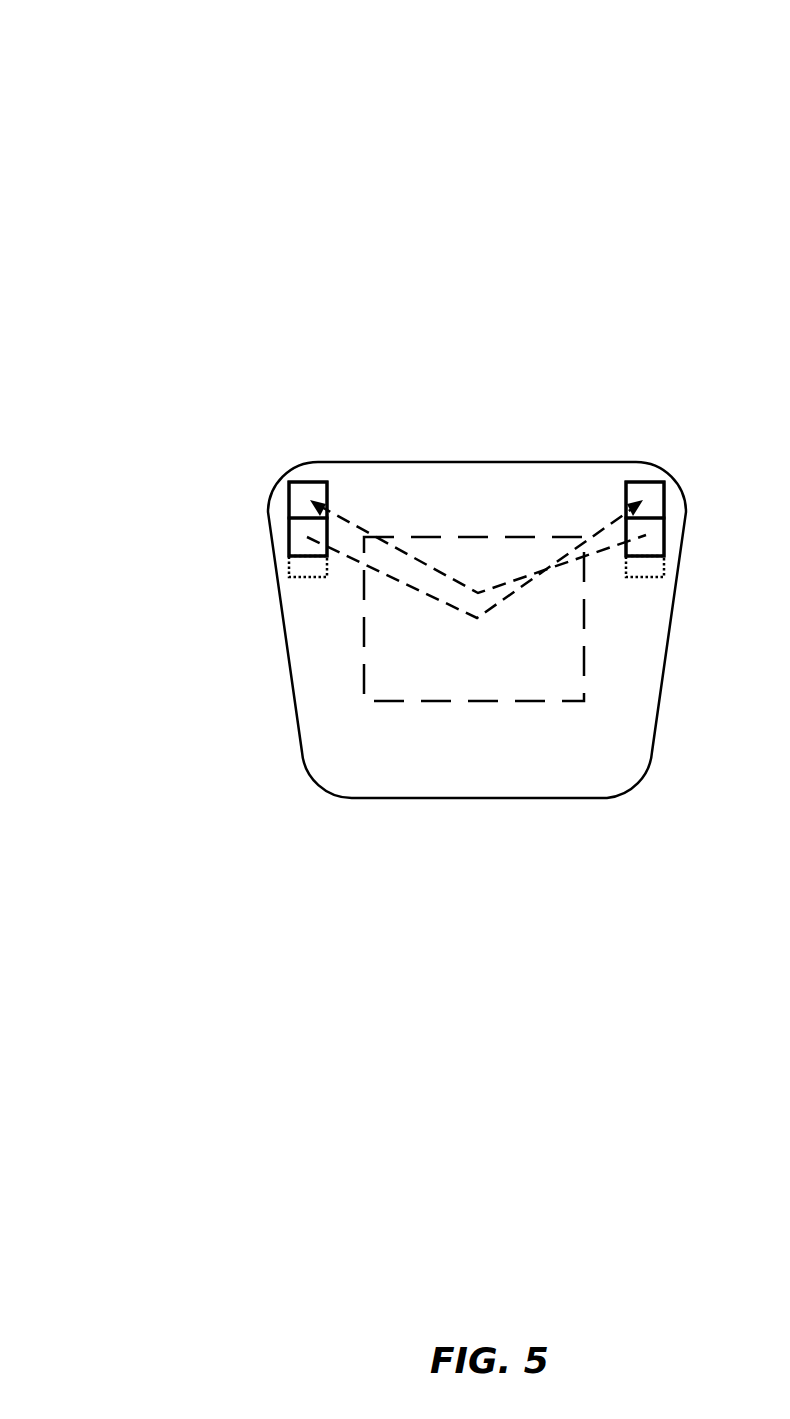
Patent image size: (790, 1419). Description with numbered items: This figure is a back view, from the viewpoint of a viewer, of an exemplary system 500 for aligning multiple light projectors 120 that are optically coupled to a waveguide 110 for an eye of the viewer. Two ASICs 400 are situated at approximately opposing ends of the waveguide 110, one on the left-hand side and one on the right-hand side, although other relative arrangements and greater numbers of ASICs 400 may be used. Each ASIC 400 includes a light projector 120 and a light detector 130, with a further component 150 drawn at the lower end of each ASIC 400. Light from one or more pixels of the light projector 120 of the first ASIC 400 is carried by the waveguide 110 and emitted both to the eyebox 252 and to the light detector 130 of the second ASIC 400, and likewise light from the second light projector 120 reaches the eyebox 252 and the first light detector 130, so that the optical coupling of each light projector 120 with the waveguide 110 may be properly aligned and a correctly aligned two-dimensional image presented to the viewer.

The system 500 is at (118, 120).
The waveguide 110 is at (487, 462).
The ASIC 400 is at (677, 407).
The light detector 130 is at (289, 500).
The light projector 120 is at (289, 547).
The dotted component 150 is at (289, 563).
The eyebox 252 is at (430, 701).